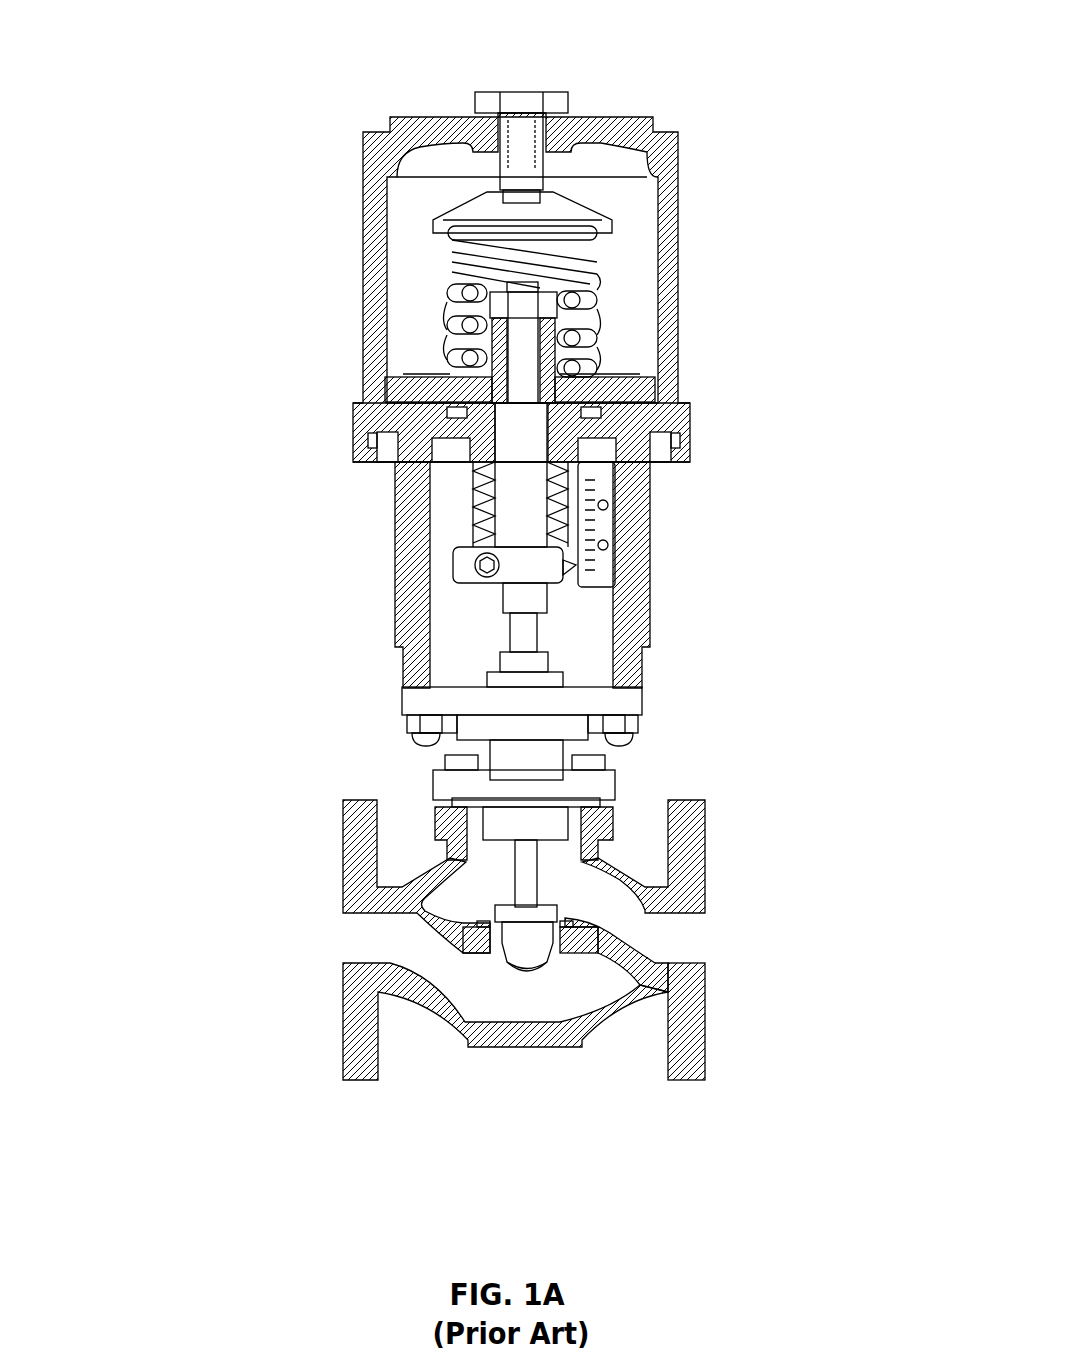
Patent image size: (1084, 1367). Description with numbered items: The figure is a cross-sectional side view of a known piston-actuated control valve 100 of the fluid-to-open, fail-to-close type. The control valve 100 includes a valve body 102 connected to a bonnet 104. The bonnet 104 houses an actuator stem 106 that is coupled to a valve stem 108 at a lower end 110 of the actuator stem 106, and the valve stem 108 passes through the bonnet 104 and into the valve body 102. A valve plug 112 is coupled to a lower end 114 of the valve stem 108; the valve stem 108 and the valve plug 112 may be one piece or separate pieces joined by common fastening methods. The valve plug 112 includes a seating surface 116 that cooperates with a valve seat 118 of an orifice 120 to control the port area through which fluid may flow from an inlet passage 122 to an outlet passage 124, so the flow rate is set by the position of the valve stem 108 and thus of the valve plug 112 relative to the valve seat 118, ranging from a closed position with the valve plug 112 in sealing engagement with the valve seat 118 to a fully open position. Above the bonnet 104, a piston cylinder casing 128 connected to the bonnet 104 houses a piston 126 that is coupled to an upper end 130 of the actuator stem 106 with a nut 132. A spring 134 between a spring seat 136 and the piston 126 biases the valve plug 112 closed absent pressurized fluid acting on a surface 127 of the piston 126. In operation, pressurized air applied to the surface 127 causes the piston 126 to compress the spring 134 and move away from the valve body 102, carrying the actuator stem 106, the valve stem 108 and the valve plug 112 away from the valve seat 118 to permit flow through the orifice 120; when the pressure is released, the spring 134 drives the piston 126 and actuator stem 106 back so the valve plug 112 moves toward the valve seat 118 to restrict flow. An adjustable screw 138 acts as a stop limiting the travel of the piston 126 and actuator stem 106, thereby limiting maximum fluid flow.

The control valve 100 is at (312, 35).
The valve body 102 is at (470, 1050).
The bonnet 104 is at (397, 558).
The actuator stem 106 is at (540, 490).
The valve stem 108 is at (605, 860).
The lower end 110 is at (480, 590).
The valve plug 112 is at (527, 973).
The lower end 114 is at (515, 903).
The seating surface 116 is at (478, 922).
The valve seat 118 is at (612, 955).
The orifice 120 is at (552, 955).
The inlet passage 122 is at (343, 960).
The outlet passage 124 is at (705, 942).
The piston 126 is at (418, 377).
The surface 127 is at (607, 407).
The piston cylinder casing 128 is at (365, 225).
The upper end 130 is at (540, 337).
The nut 132 is at (598, 285).
The spring 134 is at (600, 268).
The spring seat 136 is at (588, 200).
The adjustable screw 138 is at (477, 101).